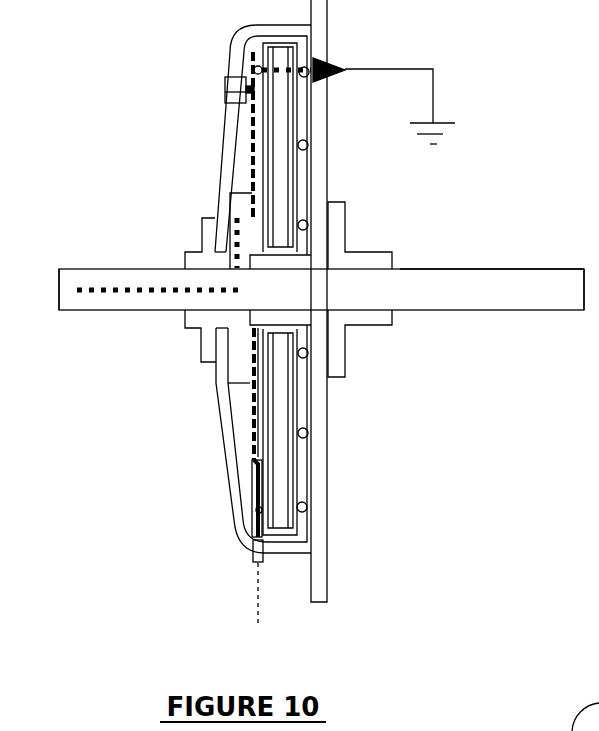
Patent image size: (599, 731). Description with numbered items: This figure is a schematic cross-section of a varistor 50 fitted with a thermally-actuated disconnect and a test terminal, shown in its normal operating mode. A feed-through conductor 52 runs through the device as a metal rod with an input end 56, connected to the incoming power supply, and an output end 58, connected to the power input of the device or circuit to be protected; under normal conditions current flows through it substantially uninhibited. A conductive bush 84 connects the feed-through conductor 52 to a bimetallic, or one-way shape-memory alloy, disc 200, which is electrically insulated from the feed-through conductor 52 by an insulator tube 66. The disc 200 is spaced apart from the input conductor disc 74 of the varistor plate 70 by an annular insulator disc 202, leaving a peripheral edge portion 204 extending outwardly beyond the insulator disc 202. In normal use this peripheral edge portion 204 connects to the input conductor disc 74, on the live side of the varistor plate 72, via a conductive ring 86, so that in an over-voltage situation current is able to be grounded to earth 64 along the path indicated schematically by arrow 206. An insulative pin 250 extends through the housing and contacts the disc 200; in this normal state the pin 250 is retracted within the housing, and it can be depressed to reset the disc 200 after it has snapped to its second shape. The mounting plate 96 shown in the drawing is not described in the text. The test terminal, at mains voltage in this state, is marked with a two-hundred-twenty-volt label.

The varistor 50 is at (122, 126).
The feed-through conductor 52 is at (140, 275).
The input end 56 is at (87, 300).
The output end 58 is at (490, 302).
The earth 64 is at (443, 132).
The insulator tube 66 is at (308, 315).
The varistor plate 70 is at (300, 489).
The varistor plate 72 is at (282, 166).
The input conductor disc 74 is at (267, 470).
The conductive bush 84 is at (197, 325).
The conductive ring 86 is at (258, 514).
The plate surface 96 is at (502, 290).
The bimetallic or one-way shape-memory alloy disc 200 is at (250, 440).
The annular insulator disc 202 is at (258, 160).
The peripheral edge portion 204 is at (252, 482).
The arrow 206 is at (102, 290).
The insulative pin 250 is at (238, 96).